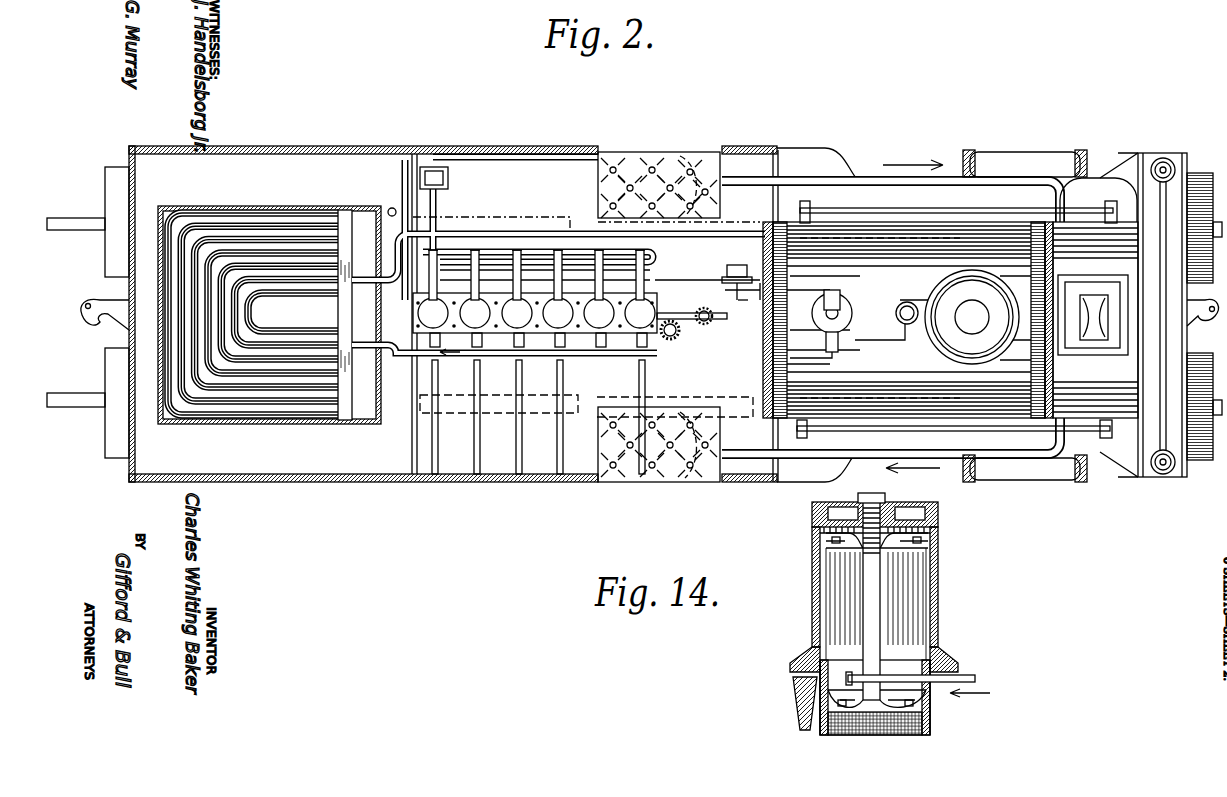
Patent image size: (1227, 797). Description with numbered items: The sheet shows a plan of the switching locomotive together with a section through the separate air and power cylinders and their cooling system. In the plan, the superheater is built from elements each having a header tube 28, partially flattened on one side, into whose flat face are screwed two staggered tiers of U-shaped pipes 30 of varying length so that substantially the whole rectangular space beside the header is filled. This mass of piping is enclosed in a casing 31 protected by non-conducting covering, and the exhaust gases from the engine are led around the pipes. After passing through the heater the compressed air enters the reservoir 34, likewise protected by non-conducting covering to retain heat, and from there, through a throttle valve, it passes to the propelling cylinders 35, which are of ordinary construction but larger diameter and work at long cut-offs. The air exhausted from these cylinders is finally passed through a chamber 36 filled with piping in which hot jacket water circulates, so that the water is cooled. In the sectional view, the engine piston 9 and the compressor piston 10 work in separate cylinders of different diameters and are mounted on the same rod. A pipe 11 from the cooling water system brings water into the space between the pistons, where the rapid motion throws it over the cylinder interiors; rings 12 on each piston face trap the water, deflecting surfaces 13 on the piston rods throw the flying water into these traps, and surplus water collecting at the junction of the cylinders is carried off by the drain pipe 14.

In FIG. 2, the tube 28 is at (338, 245).
In FIG. 2, the pipes 30 is at (326, 331).
In FIG. 2, the casing 31 is at (317, 206).
In FIG. 2, the reservoir 34 is at (904, 317).
In FIG. 2, the propelling cylinders 35 is at (1002, 156).
In FIG. 2, the chamber 36 is at (1095, 298).
In FIG. 14, the piston of the engine 9 is at (937, 526).
In FIG. 14, the piston of the compressor 10 is at (930, 728).
In FIG. 14, the pipe 11 is at (976, 678).
In FIG. 14, the rings 12 is at (929, 548).
In FIG. 14, the deflecting surfaces 13 is at (887, 533).
In FIG. 14, the drain pipe 14 is at (795, 688).